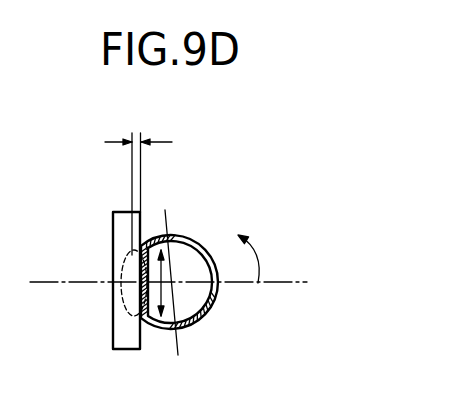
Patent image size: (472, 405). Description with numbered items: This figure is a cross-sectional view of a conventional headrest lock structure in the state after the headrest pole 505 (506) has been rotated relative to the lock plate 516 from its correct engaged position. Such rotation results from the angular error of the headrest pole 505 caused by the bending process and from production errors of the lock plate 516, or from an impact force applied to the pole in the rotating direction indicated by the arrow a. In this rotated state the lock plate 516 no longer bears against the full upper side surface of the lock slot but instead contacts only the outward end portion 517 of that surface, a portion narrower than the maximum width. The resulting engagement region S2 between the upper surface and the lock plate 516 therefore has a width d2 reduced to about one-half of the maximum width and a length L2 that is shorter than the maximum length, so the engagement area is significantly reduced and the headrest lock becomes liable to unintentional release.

The lock plate 516 is at (113, 218).
The outward end portion 517 is at (143, 218).
The headrest pole 505 is at (240, 254).
The roller 506 is at (182, 233).
The engagement region S2 is at (138, 300).
The length of the engagement region L2 is at (180, 283).
The width of the engagement region d2 is at (138, 125).
The arrow indicating direction of rotation a is at (260, 263).